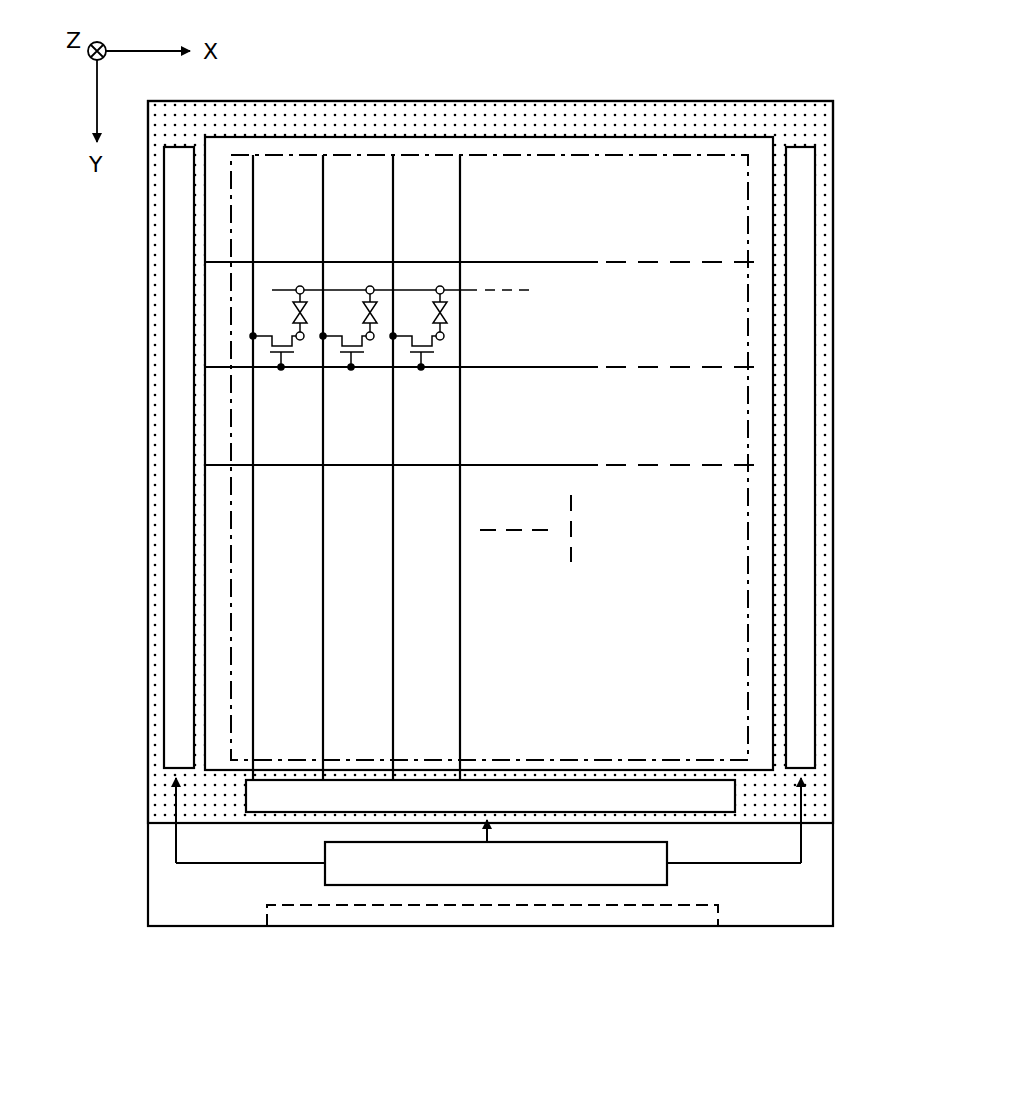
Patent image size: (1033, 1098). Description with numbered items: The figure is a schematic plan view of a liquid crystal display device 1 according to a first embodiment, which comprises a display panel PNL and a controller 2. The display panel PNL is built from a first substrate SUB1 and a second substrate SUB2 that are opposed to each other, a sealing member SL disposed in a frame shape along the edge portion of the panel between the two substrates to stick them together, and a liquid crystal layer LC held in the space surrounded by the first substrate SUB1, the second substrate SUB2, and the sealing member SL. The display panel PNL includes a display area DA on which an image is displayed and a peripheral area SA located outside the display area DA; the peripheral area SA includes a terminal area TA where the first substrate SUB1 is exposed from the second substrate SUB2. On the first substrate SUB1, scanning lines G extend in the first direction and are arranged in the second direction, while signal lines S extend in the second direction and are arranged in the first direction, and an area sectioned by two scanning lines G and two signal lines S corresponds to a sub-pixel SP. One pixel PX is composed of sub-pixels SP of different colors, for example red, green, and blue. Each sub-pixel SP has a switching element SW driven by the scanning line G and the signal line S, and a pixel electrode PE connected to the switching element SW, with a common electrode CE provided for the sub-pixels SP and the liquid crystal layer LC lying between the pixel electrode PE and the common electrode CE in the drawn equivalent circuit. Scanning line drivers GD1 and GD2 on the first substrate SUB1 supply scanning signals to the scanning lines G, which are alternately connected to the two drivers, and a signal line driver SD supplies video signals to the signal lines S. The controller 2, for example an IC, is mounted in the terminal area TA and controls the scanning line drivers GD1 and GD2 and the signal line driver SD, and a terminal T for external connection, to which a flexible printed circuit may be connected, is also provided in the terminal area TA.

The liquid crystal display device 1 is at (760, 84).
The sealing member SL is at (512, 101).
The display area DA is at (617, 178).
The peripheral area SA is at (684, 114).
The scanning line driver GD1 is at (164, 405).
The scanning line driver GD2 is at (815, 407).
The pixel PX is at (432, 218).
The sub-pixel SP is at (294, 278).
The common electrode CE is at (447, 290).
The liquid crystal layer LC is at (447, 312).
The scanning line G is at (585, 262).
The switching element SW is at (430, 353).
The pixel electrode PE is at (444, 342).
The signal line S is at (253, 588).
The signal line driver SD is at (690, 780).
The display panel PNL is at (422, 513).
The first substrate SUB1 is at (148, 888).
The second substrate SUB2 is at (164, 822).
The terminal area TA is at (225, 900).
The controller 2 is at (398, 875).
The terminal T is at (672, 913).